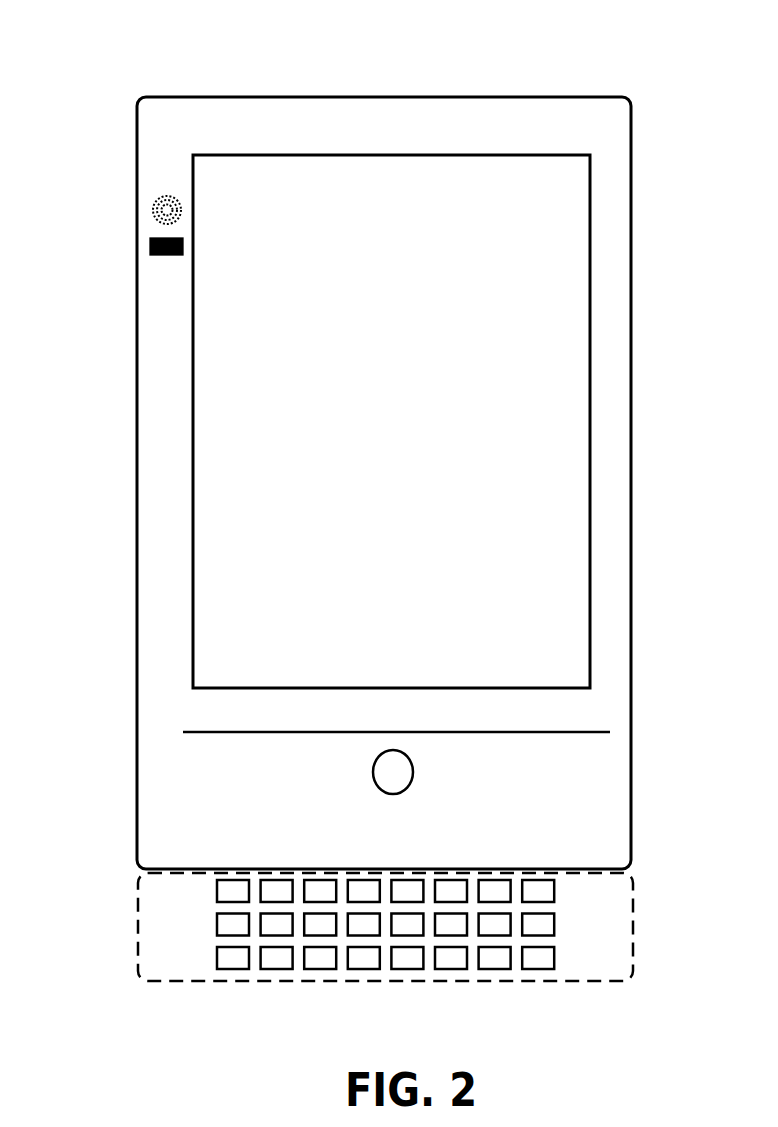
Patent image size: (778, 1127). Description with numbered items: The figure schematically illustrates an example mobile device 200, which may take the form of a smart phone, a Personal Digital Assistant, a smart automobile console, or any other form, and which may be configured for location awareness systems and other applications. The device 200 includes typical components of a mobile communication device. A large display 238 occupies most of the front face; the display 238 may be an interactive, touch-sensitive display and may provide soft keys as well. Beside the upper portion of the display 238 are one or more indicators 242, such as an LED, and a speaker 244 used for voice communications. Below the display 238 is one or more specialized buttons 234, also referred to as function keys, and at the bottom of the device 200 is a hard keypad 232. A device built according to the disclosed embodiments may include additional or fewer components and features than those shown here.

The mobile device 200 is at (588, 72).
The hard keypad 232 is at (137, 951).
The specialized buttons 234 is at (378, 790).
The display 238 is at (212, 680).
The indicators 242 is at (150, 246).
The speaker 244 is at (152, 207).